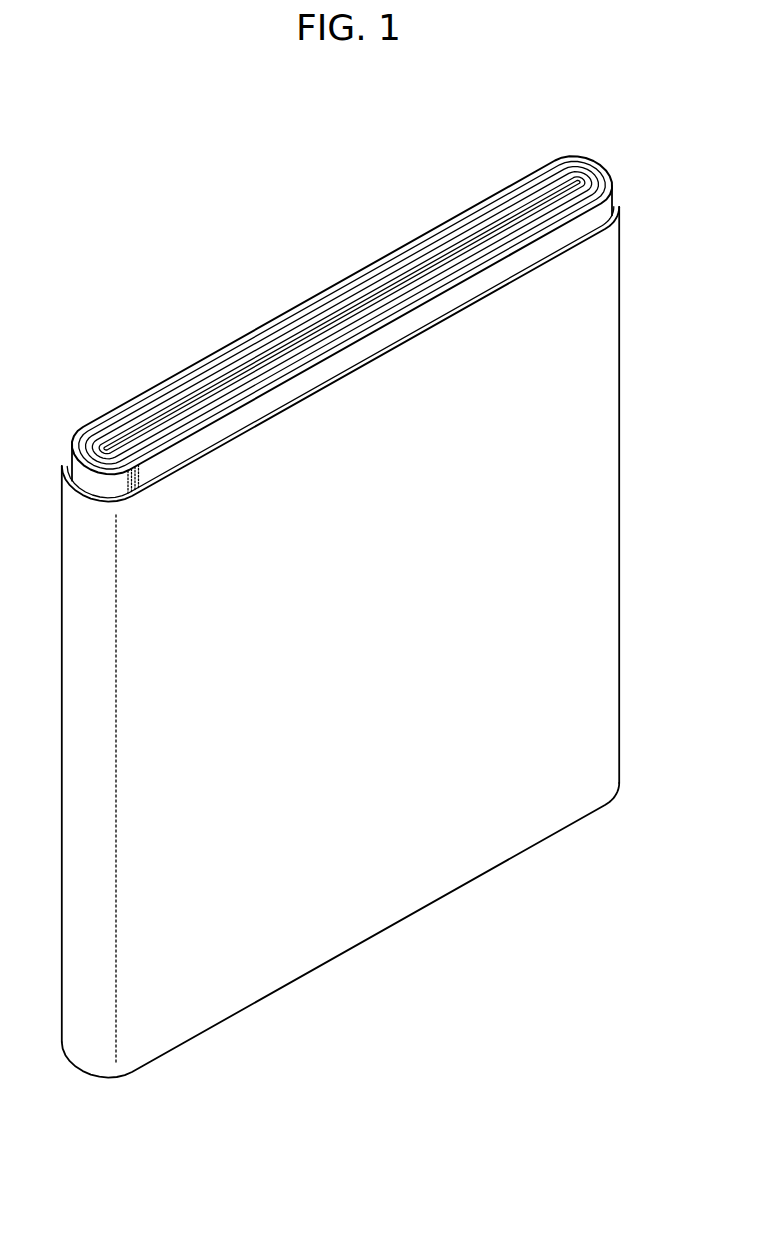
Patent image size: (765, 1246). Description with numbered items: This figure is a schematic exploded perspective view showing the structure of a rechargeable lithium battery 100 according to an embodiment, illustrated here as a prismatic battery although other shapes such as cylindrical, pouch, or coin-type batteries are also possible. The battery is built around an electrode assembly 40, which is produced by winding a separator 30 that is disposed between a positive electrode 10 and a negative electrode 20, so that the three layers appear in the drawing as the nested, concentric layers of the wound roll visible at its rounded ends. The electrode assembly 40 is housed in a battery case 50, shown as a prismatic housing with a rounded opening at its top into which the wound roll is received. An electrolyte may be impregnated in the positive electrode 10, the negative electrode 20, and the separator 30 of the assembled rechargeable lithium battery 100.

The rechargeable lithium battery 100 is at (322, 110).
The positive electrode 10 is at (613, 179).
The negative electrode 20 is at (580, 168).
The separator 30 is at (598, 163).
The electrode assembly 40 is at (316, 268).
The battery case 50 is at (603, 483).